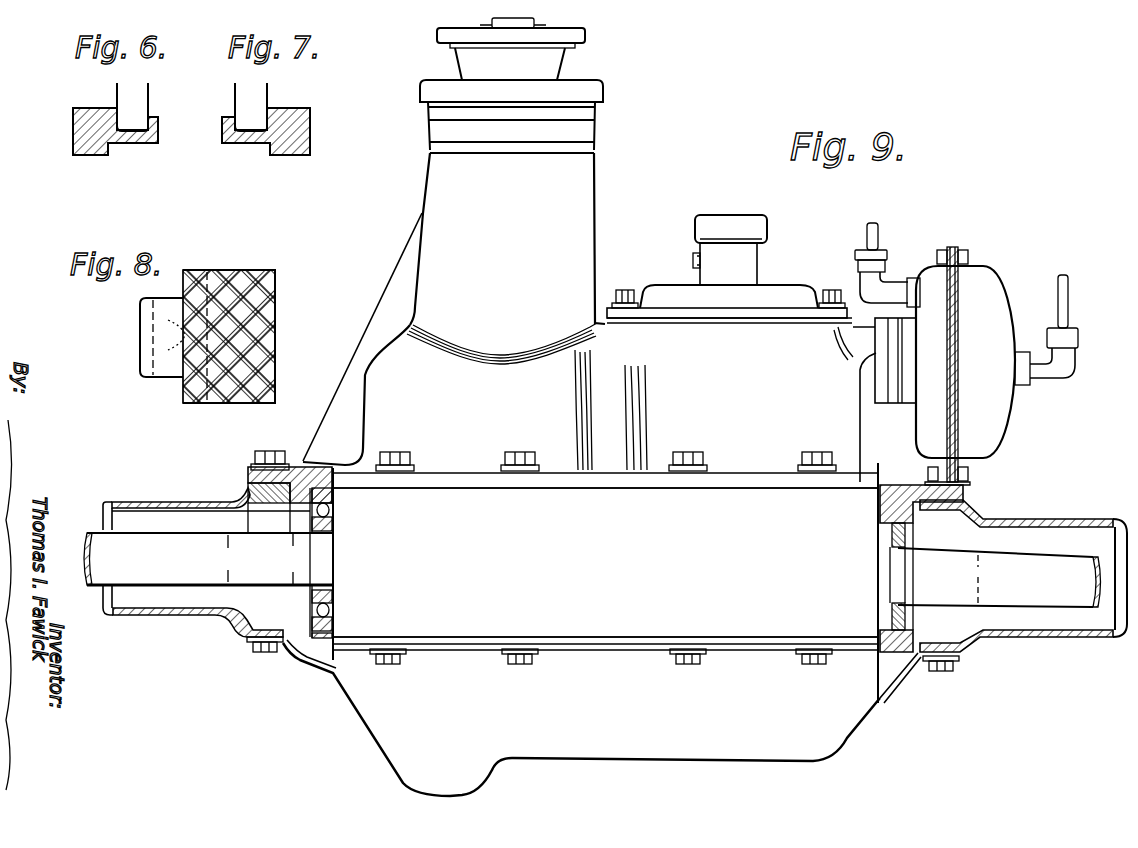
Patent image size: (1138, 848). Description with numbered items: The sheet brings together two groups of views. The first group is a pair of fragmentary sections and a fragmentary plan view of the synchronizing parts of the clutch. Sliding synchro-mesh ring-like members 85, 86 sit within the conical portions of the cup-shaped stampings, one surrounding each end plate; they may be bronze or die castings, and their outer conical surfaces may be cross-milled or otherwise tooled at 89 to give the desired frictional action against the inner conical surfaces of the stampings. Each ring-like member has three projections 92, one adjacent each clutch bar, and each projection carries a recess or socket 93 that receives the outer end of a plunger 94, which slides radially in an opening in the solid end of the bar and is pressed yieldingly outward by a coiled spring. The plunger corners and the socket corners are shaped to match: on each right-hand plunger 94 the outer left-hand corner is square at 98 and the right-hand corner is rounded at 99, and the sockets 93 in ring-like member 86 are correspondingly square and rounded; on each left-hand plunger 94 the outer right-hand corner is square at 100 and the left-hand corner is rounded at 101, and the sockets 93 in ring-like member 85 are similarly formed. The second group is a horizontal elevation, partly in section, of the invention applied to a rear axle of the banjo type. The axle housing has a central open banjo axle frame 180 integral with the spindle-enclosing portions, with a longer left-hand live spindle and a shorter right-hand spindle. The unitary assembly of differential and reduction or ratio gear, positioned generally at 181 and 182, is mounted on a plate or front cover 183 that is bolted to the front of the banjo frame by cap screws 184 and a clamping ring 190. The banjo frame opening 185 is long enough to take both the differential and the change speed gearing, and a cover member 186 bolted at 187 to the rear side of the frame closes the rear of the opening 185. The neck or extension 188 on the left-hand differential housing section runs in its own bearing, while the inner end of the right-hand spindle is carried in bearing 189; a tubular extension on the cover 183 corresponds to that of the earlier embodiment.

In FIG. 6, the sliding synchro-mesh ring-like member 85 is at (90, 127).
In FIG. 7, the sliding synchro-mesh ring-like member 86 is at (305, 137).
In FIG. 8, the sliding synchro-mesh ring-like member 86 is at (276, 348).
In FIG. 6, the plunger 94 is at (136, 108).
In FIG. 7, the plunger 94 is at (242, 96).
In FIG. 6, the rounded left-hand corner 101 is at (119, 116).
In FIG. 6, the square right-hand corner 100 is at (133, 143).
In FIG. 7, the rounded right-hand corner 99 is at (266, 116).
In FIG. 7, the square left-hand corner 98 is at (252, 143).
In FIG. 8, the cross-milled friction surface 89 is at (276, 290).
In FIG. 8, the projection 92 is at (140, 306).
In FIG. 8, the socket 93 is at (180, 335).
In FIG. 9, the differential position 181 is at (605, 515).
In FIG. 9, the reduction or ratio gear position 182 is at (722, 500).
In FIG. 9, the cap screws 184 is at (270, 452).
In FIG. 9, the plate or front cover 183 is at (250, 467).
In FIG. 9, the clamping ring 190 is at (248, 493).
In FIG. 9, the banjo frame opening 185 is at (266, 518).
In FIG. 9, the neck or extension 188 is at (332, 528).
In FIG. 9, the banjo axle frame 180 is at (347, 558).
In FIG. 9, the bolts 187 is at (264, 654).
In FIG. 9, the cover member 186 is at (385, 712).
In FIG. 9, the bearing 189 is at (892, 538).